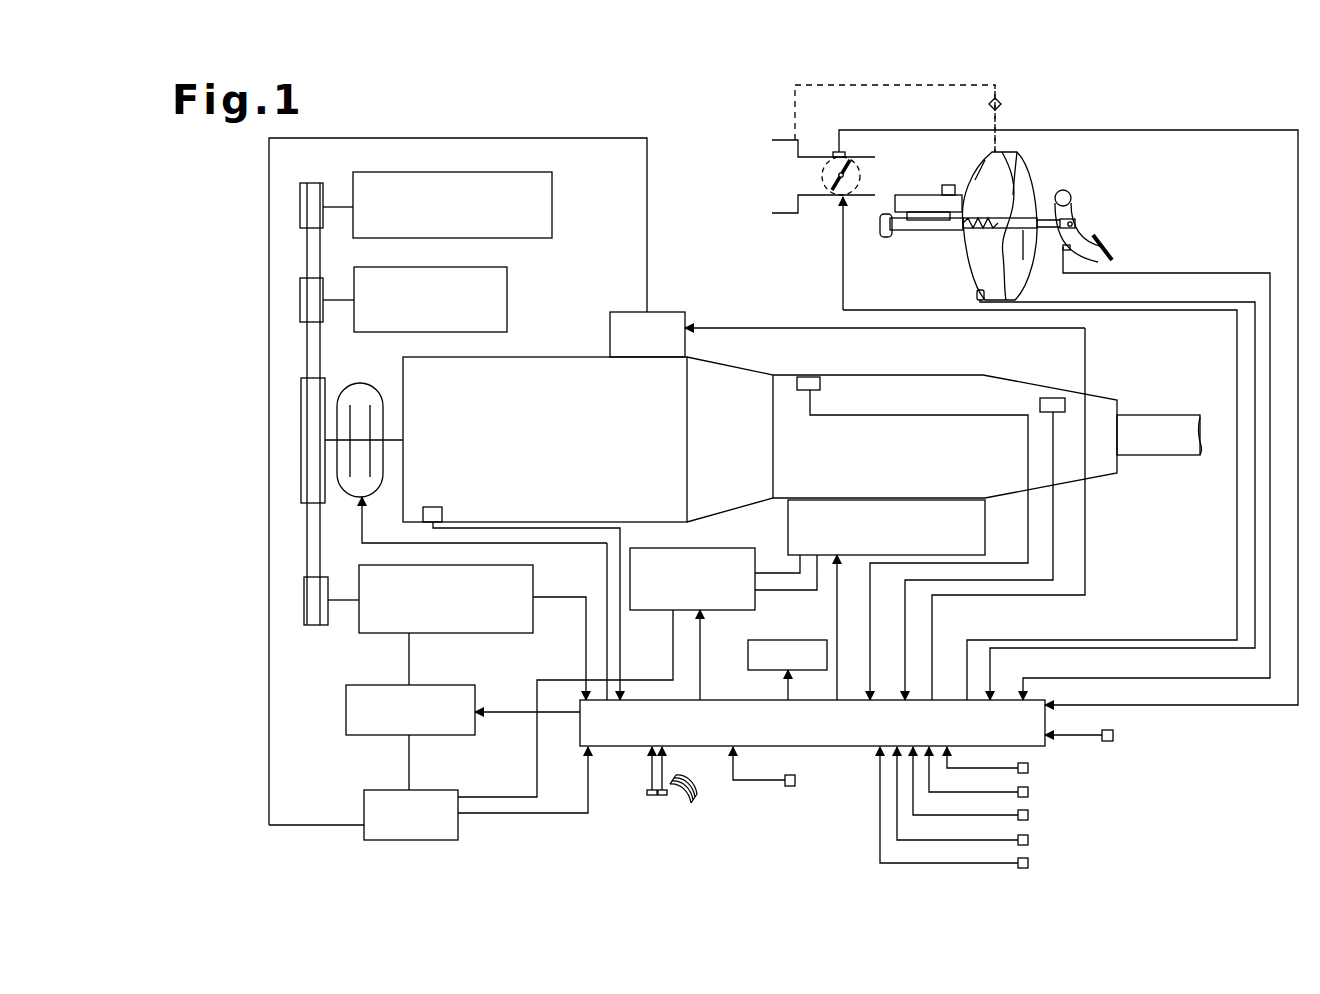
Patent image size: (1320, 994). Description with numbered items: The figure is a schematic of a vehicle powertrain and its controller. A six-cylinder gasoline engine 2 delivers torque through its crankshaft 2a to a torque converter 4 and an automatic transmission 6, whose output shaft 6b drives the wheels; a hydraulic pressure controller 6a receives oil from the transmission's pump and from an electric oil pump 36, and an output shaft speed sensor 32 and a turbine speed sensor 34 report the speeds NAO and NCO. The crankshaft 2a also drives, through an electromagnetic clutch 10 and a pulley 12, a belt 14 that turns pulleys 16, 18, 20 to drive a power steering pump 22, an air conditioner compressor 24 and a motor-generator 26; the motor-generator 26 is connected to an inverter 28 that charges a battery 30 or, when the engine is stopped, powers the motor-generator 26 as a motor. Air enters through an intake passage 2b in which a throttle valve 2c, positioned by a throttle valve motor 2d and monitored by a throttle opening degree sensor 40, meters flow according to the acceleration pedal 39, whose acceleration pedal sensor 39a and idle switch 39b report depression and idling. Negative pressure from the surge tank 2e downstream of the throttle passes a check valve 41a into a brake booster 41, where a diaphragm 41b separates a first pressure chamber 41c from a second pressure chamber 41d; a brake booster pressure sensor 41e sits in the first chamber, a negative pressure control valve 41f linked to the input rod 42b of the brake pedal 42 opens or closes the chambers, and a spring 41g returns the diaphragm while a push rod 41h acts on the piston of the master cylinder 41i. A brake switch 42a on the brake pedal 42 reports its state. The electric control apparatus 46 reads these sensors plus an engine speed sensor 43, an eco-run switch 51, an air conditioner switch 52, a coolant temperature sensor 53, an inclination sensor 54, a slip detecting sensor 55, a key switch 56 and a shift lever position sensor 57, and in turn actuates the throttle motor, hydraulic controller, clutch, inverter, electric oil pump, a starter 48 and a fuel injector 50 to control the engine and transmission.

The gasoline engine 2 is at (592, 357).
The crankshaft 2a is at (395, 437).
The intake passage 2b is at (816, 213).
The throttle valve 2c is at (832, 190).
The throttle valve motor 2d is at (860, 176).
The surge tank 2e is at (784, 140).
The torque converter 4 is at (736, 368).
The automatic transmission 6 is at (892, 378).
The hydraulic pressure controller 6a is at (995, 547).
The output shaft 6b is at (1157, 415).
The electromagnetic clutch 10 is at (375, 383).
The pulley 12 is at (301, 442).
The belt 14 is at (307, 352).
The pulley 16 is at (300, 208).
The pulley 18 is at (300, 302).
The pulley 20 is at (304, 602).
The power steering pump 22 is at (552, 207).
The compressor 24 is at (507, 300).
The motor-generator 26 is at (533, 584).
The inverter 28 is at (465, 685).
The battery 30 is at (448, 790).
The output shaft speed sensor 32 is at (1040, 400).
The turbine speed sensor 34 is at (820, 384).
The electric oil pump 36 is at (716, 548).
The acceleration pedal 39 is at (691, 800).
The acceleration pedal sensor 39a is at (662, 796).
The idle switch 39b is at (647, 796).
The throttle opening degree sensor 40 is at (834, 152).
The brake booster 41 is at (1020, 156).
The check valve 41a is at (989, 104).
The diaphragm 41b is at (1022, 176).
The first pressure chamber 41c is at (985, 168).
The second pressure chamber 41d is at (1012, 152).
The brake booster pressure sensor 41e is at (977, 294).
The negative pressure control valve 41f is at (1023, 260).
The spring 41g is at (988, 218).
The push rod 41h is at (985, 228).
The master cylinder 41i is at (900, 230).
The brake pedal 42 is at (1105, 246).
The brake switch 42a is at (1098, 270).
The input rod 42b is at (1070, 190).
The engine speed sensor 43 is at (440, 507).
The electric control apparatus 46 is at (726, 698).
The starter 48 is at (668, 312).
The fuel injector 50 is at (796, 640).
The eco-run switch 51 is at (1028, 792).
The air conditioner switch 52 is at (1028, 815).
The coolant temperature sensor 53 is at (795, 780).
The inclination sensor 54 is at (1028, 840).
The slip detecting sensor 55 is at (1028, 863).
The key switch 56 is at (1028, 768).
The shift lever position sensor 57 is at (1113, 735).